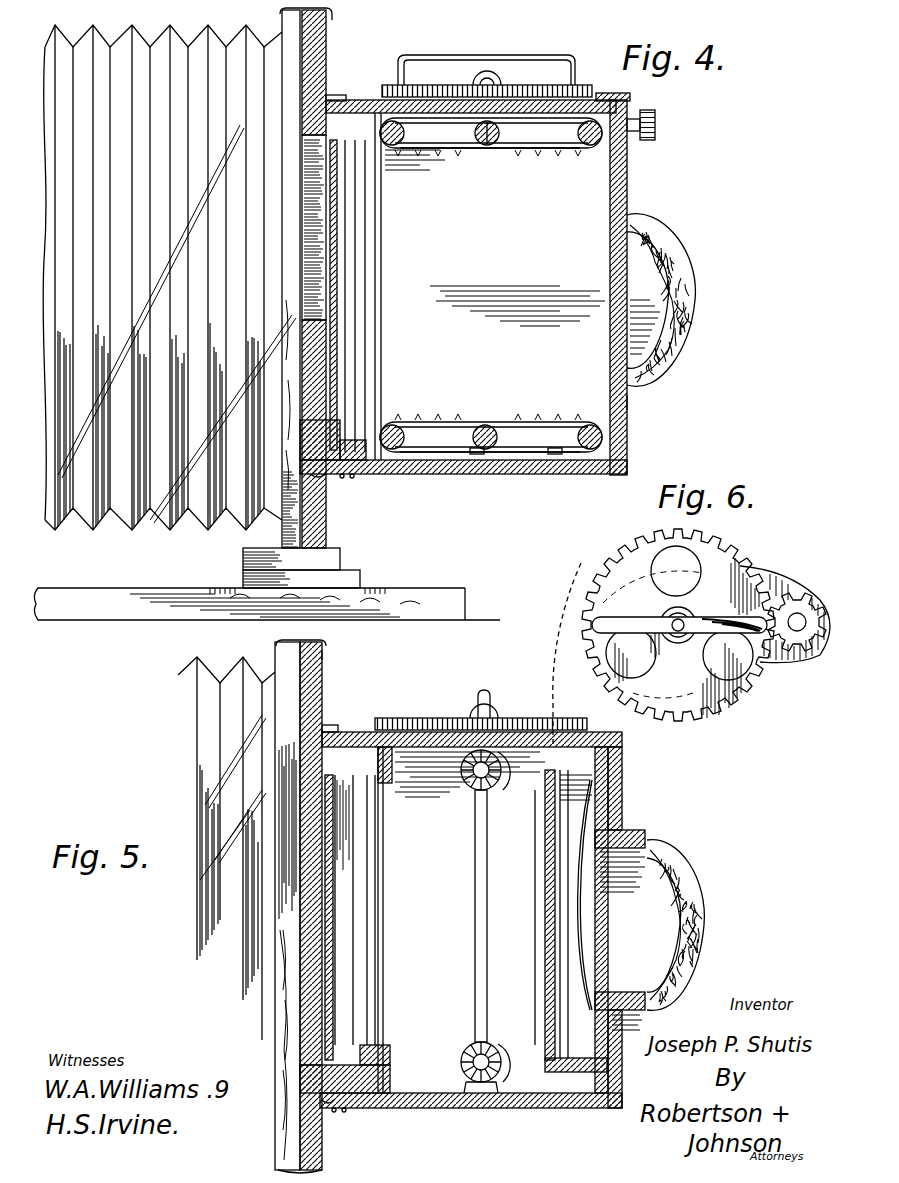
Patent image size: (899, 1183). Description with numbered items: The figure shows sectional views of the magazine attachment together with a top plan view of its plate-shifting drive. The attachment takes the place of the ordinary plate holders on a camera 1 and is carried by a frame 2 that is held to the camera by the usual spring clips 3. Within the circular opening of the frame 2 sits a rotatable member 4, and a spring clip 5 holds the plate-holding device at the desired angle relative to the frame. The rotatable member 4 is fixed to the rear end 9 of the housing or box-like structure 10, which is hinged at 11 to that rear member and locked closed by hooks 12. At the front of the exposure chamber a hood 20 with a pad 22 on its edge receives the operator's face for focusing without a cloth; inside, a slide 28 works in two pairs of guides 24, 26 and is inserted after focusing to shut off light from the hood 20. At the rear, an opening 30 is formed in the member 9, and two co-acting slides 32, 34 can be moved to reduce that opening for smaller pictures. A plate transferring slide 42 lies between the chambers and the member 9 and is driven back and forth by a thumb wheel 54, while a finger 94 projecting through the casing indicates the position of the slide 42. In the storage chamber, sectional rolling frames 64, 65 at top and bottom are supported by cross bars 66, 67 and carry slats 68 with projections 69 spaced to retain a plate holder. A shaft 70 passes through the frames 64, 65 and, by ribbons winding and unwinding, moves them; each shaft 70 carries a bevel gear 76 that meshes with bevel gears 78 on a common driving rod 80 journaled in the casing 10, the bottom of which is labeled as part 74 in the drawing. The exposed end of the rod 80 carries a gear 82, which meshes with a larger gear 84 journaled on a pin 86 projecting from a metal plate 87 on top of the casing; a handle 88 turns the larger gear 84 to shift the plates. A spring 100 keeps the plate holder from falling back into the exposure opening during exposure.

In FIG. 4, the camera 1 is at (168, 36).
In FIG. 5, the camera 1 is at (218, 676).
In FIG. 4, the frame 2 is at (326, 66).
In FIG. 5, the frame 2 is at (323, 702).
In FIG. 5, the spring clips 3 is at (326, 642).
In FIG. 4, the rotatable member 4 is at (345, 420).
In FIG. 5, the rotatable member 4 is at (300, 1070).
In FIG. 4, the spring clip 5 is at (330, 40).
In FIG. 5, the spring clip 5 is at (326, 672).
In FIG. 4, the rear end of housing 9 is at (328, 476).
In FIG. 5, the rear end of housing 9 is at (322, 1098).
In FIG. 4, the housing or box-like structure 10 is at (628, 172).
In FIG. 5, the housing or box-like structure 10 is at (520, 1100).
In FIG. 4, the hinge 11 is at (352, 478).
In FIG. 5, the hinge 11 is at (345, 1110).
In FIG. 4, the hooks 12 is at (338, 96).
In FIG. 5, the hooks 12 is at (338, 726).
In FIG. 4, the hood 20 is at (655, 288).
In FIG. 5, the hood 20 is at (655, 916).
In FIG. 4, the pad 22 is at (690, 320).
In FIG. 5, the pad 22 is at (688, 875).
In FIG. 5, the guides 24 is at (534, 843).
In FIG. 5, the guides 26 is at (546, 878).
In FIG. 5, the slide 28 is at (546, 895).
In FIG. 4, the opening 30 is at (346, 322).
In FIG. 5, the opening 30 is at (336, 972).
In FIG. 4, the co-acting slide 32 is at (338, 222).
In FIG. 5, the co-acting slide 32 is at (334, 890).
In FIG. 4, the co-acting slide 34 is at (356, 356).
In FIG. 5, the co-acting slide 34 is at (336, 1008).
In FIG. 4, the plate transferring slide 42 is at (400, 425).
In FIG. 5, the plate transferring slide 42 is at (390, 1075).
In FIG. 4, the thumb wheel 54 is at (656, 124).
In FIG. 4, the sectional rolling frame 64 is at (540, 150).
In FIG. 4, the sectional rolling frame 65 is at (560, 420).
In FIG. 4, the cross bars 66 is at (398, 148).
In FIG. 4, the cross bars 67 is at (400, 450).
In FIG. 4, the slats 68 is at (528, 456).
In FIG. 4, the projections 69 is at (487, 146).
In FIG. 4, the shaft 70 is at (495, 150).
In FIG. 5, the bottom plate 74 is at (435, 1096).
In FIG. 4, the bevel gear 76 is at (605, 396).
In FIG. 5, the bevel gear 76 is at (464, 780).
In FIG. 5, the bevel gears 78 is at (500, 786).
In FIG. 5, the driving rod 80 is at (474, 912).
In FIG. 6, the gear 82 is at (800, 594).
In FIG. 4, the larger gear 84 is at (594, 92).
In FIG. 6, the larger gear 84 is at (738, 565).
In FIG. 5, the larger gear 84 is at (410, 720).
In FIG. 4, the pin 86 is at (490, 80).
In FIG. 6, the pin 86 is at (677, 643).
In FIG. 4, the metal plate 87 is at (532, 96).
In FIG. 6, the metal plate 87 is at (768, 660).
In FIG. 5, the metal plate 87 is at (470, 712).
In FIG. 4, the handle 88 is at (562, 58).
In FIG. 6, the handle 88 is at (612, 620).
In FIG. 5, the handle 88 is at (490, 694).
In FIG. 4, the finger 94 is at (631, 97).
In FIG. 5, the spring 100 is at (372, 1050).